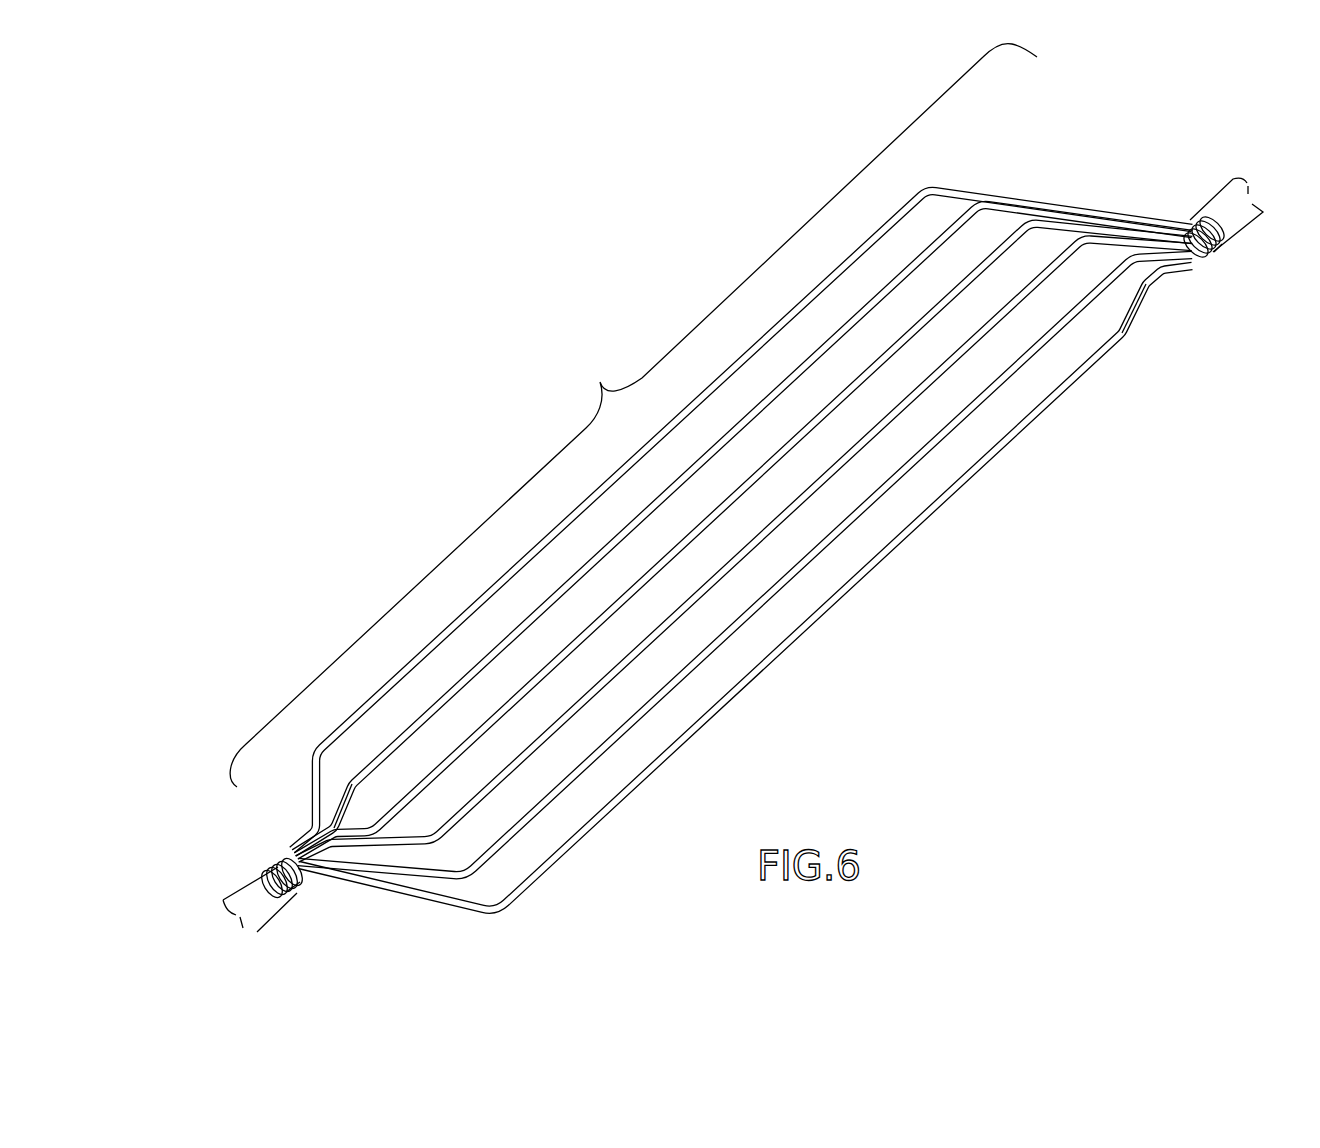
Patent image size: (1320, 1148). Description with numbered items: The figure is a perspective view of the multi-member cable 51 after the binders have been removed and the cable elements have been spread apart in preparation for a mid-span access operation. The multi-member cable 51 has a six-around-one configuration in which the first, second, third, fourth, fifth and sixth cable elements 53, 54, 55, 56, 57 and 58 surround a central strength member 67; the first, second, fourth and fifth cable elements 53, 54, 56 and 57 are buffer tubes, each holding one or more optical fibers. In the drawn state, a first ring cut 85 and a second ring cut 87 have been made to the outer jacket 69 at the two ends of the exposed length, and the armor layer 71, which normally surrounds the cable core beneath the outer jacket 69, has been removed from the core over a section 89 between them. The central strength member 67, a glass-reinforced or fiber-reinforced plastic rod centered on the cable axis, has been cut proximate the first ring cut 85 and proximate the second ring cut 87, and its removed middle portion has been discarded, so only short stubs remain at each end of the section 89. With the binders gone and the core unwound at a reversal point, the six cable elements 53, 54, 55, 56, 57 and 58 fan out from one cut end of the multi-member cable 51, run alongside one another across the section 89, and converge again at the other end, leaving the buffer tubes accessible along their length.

The multi-member cable 51 is at (205, 885).
The first cable element 53 is at (600, 812).
The second cable element 54 is at (570, 773).
The third cable element 55 is at (538, 738).
The fourth cable element 56 is at (506, 703).
The fifth cable element 57 is at (474, 669).
The sixth cable element 58 is at (443, 633).
The central strength member 67 is at (358, 803).
The outer jacket 69 is at (252, 898).
The armor layer 71 is at (302, 885).
The first ring cut 85 is at (1222, 248).
The second ring cut 87 is at (294, 895).
The section 89 is at (633, 415).